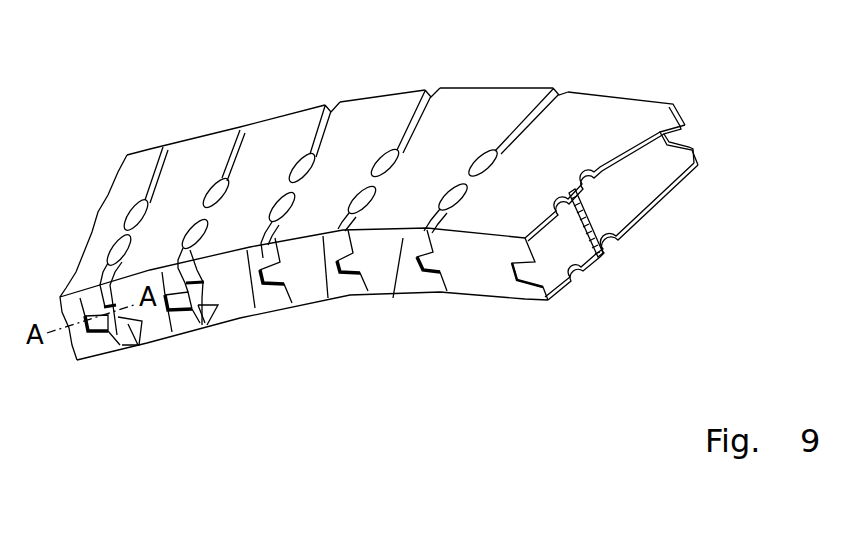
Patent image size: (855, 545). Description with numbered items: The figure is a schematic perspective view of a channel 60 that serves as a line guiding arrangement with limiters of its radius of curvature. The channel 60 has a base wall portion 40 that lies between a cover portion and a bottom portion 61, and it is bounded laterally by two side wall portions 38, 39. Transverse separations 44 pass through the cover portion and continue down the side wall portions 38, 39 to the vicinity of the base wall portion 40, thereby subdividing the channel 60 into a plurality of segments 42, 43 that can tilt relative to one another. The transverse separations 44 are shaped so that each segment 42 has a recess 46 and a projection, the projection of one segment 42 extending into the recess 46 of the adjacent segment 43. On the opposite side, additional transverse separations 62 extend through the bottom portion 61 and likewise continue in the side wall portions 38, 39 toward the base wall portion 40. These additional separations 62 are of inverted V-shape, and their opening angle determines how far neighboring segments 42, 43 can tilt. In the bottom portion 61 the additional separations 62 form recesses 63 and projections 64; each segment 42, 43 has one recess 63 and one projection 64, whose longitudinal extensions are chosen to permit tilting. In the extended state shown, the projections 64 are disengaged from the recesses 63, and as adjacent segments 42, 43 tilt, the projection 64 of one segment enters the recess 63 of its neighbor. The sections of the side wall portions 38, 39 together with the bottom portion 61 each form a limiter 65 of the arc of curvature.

The side wall portion 38 is at (598, 116).
The side wall portion 39 is at (633, 198).
The base wall portion 40 is at (608, 241).
The segment 42 is at (166, 201).
The segment 43 is at (250, 178).
The transverse separation 44 is at (163, 147).
The recess 46 is at (689, 134).
The channel 60 is at (322, 418).
The bottom portion 61 is at (487, 280).
The additional transverse separation 62 is at (247, 251).
The recess 63 is at (97, 330).
The projection 64 is at (127, 318).
The limiter of the arc of curvature 65 is at (368, 376).